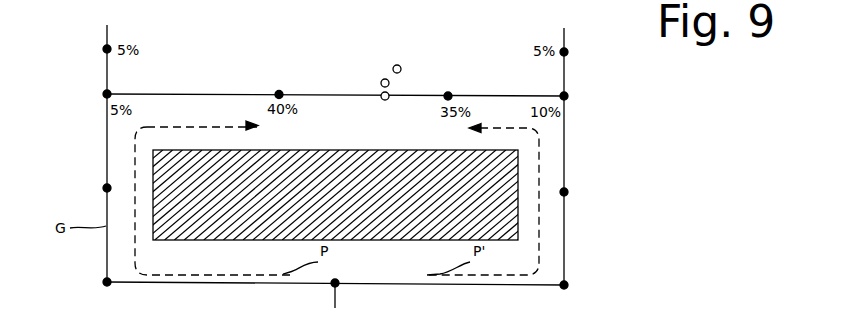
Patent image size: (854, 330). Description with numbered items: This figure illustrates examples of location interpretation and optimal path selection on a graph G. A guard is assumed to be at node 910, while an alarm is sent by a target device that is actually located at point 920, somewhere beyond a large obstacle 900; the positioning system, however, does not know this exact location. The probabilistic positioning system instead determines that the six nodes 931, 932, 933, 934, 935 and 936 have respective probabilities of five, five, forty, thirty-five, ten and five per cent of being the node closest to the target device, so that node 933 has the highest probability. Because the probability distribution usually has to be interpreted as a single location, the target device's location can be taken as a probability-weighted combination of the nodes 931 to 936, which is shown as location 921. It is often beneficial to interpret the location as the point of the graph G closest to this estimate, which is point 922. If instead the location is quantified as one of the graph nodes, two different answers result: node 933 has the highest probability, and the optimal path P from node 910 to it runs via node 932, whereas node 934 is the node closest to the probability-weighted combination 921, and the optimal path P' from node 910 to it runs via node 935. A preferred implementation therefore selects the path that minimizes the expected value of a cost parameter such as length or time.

The large obstacle 900 is at (335, 195).
The node 910 is at (338, 281).
The point 920 is at (401, 66).
The location 921 is at (381, 81).
The point 922 is at (384, 100).
The node 931 is at (104, 49).
The node 932 is at (104, 94).
The node 933 is at (278, 92).
The node 934 is at (450, 94).
The node 935 is at (568, 96).
The node 936 is at (568, 52).